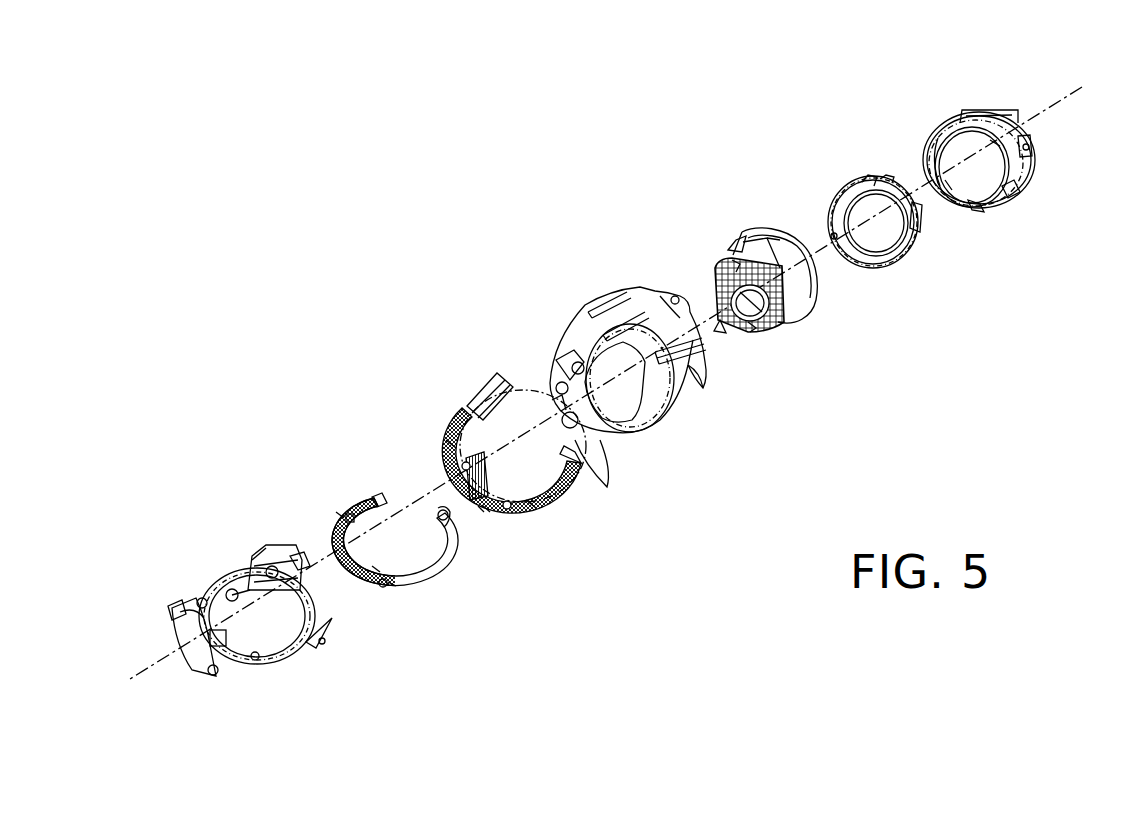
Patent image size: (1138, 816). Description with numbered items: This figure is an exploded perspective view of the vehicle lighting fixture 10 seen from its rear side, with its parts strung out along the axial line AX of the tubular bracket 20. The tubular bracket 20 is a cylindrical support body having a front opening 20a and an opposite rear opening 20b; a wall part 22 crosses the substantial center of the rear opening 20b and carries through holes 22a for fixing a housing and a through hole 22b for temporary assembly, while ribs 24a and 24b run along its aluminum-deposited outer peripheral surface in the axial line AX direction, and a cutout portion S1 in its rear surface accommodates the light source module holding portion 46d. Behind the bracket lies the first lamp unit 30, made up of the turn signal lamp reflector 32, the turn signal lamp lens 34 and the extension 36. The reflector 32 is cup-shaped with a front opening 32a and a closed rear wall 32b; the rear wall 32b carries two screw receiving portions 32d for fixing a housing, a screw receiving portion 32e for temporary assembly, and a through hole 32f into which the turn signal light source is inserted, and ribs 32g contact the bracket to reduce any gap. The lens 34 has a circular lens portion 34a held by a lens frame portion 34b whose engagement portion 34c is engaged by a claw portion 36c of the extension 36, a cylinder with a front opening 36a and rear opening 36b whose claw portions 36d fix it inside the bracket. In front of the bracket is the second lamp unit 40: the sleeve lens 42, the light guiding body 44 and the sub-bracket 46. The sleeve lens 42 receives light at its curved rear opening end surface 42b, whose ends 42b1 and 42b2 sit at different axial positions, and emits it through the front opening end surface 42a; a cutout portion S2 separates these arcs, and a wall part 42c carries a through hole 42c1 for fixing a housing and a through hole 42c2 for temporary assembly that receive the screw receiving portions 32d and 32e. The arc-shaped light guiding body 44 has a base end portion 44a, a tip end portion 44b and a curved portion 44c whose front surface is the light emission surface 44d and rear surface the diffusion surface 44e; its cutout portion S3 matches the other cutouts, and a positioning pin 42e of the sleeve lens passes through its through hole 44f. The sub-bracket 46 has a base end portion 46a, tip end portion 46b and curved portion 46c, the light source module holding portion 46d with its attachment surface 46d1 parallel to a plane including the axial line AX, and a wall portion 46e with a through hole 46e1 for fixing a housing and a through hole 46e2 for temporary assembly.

The vehicle lighting fixture 10 is at (460, 135).
The tubular bracket 20 is at (565, 300).
The front opening 20a is at (641, 290).
The rear opening 20b is at (628, 434).
The wall part 22 is at (592, 410).
The through holes for fixing a housing 22a is at (592, 448).
The through hole for temporary assembly 22b is at (556, 392).
The rib 24a is at (603, 302).
The rib 24b is at (700, 352).
The first lamp unit 30 is at (862, 30).
The turn signal lamp reflector 32 is at (754, 267).
The front opening 32a is at (786, 230).
The rear wall 32b is at (790, 302).
The screw receiving portions for fixing a housing 32d is at (746, 238).
The screw receiving portion for temporary assembly 32e is at (716, 282).
The through hole 32f is at (764, 316).
The ribs 32g is at (735, 262).
The turn signal lamp lens 34 is at (870, 211).
The lens portion 34a is at (878, 240).
The lens frame portion 34b is at (862, 180).
The engagement portion 34c is at (812, 160).
The extension 36 is at (979, 153).
The front opening 36a is at (952, 186).
The rear opening 36b is at (980, 212).
The claw portion 36c is at (968, 112).
The claw portions 36d is at (1034, 150).
The second lamp unit 40 is at (421, 314).
The sleeve lens 42 is at (447, 358).
The front opening end surface 42a is at (526, 470).
The rear opening end surface 42b is at (444, 458).
The one end 42b1 is at (470, 400).
The other end 42b2 is at (570, 470).
The wall part 42c is at (488, 490).
The through hole for fixing a housing 42c1 is at (484, 506).
The through hole for temporary assembly 42c2 is at (478, 508).
The positioning pin 42e is at (446, 448).
The light guiding body 44 is at (315, 457).
The base end portion 44a is at (376, 498).
The tip end portion 44b is at (444, 528).
The curved portion 44c is at (352, 526).
The light emission surface 44d is at (378, 568).
The diffusion surface 44e is at (380, 590).
The through hole 44f is at (340, 514).
The sub-bracket 46 is at (192, 521).
The base end portion 46a is at (234, 588).
The tip end portion 46b is at (298, 558).
The curved portion 46c is at (247, 652).
The light source module holding portion 46d is at (278, 548).
The light source module attachment surface 46d1 is at (248, 562).
The wall portion 46e is at (184, 640).
The through hole for fixing a housing 46e1 is at (204, 600).
The through hole for temporary assembly 46e2 is at (176, 614).
The cutout portion S1 is at (608, 356).
The cutout portion S2 is at (517, 420).
The cutout portion S3 is at (442, 498).
The axial line AX is at (1050, 104).